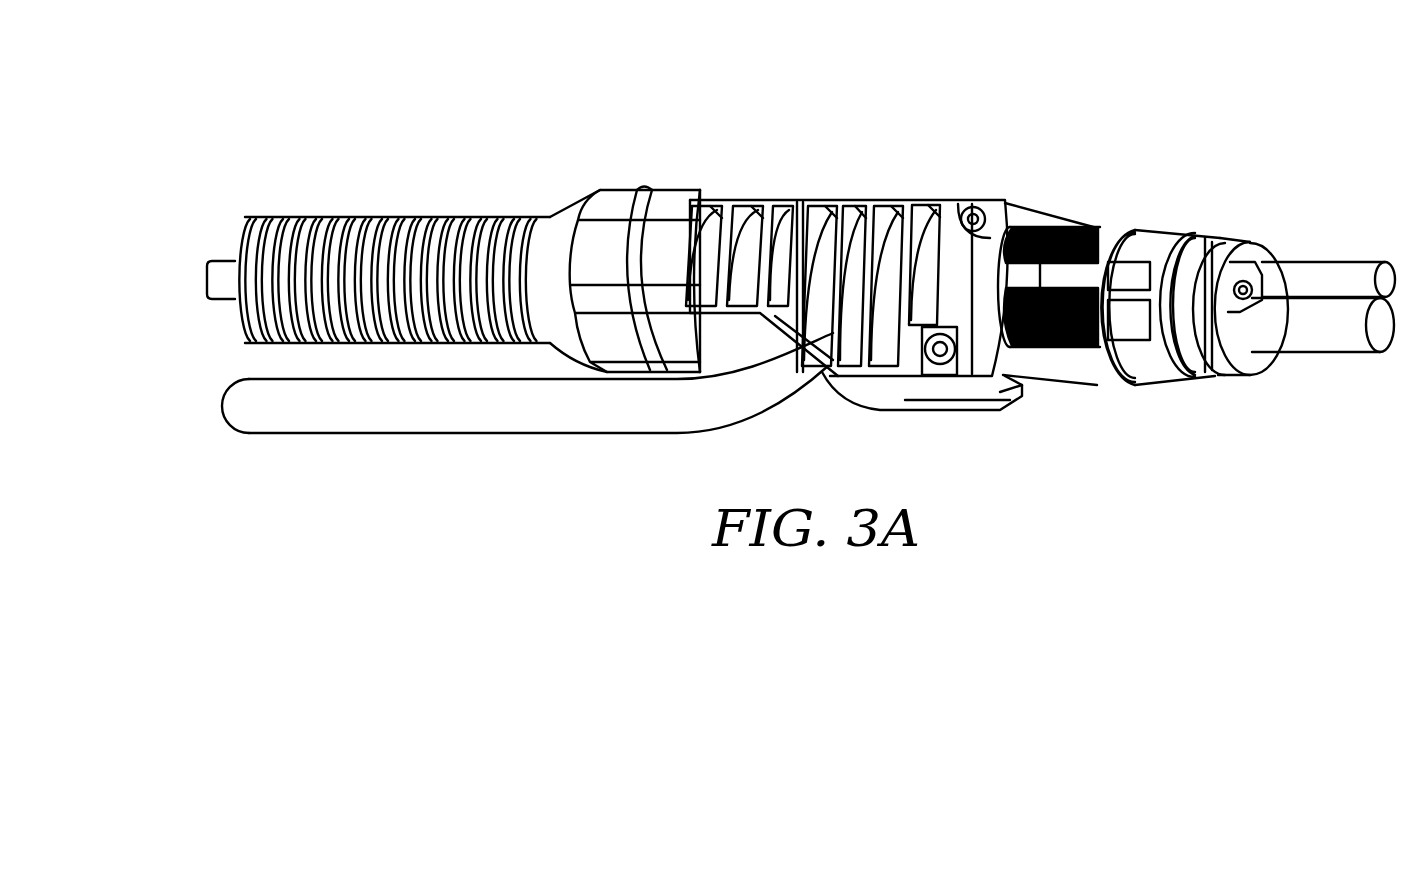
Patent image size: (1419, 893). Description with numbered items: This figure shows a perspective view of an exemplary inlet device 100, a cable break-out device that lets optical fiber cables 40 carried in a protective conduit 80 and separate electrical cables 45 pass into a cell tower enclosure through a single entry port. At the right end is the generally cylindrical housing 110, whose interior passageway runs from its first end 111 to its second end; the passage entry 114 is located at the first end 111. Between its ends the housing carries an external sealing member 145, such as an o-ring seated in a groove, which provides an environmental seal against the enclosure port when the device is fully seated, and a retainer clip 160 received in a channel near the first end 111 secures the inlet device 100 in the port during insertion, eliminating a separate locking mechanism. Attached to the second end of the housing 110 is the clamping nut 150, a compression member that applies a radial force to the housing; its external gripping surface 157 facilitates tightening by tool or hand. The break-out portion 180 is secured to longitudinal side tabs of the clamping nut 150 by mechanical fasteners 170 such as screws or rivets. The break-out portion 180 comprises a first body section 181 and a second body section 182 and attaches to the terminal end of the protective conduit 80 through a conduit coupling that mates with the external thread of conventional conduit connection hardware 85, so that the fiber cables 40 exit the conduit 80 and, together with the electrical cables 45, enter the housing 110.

The inlet device 100 is at (1180, 107).
The optical fiber jumper lines or cables 40 is at (208, 278).
The electrical jumper lines or cables 45 is at (468, 415).
The protective conduit 80 is at (407, 215).
The conduit connection hardware 85 is at (714, 199).
The break-out portion 180 is at (847, 244).
The first body section 181 is at (857, 199).
The second body section 182 is at (913, 413).
The mechanical fasteners 170 is at (970, 205).
The clamping nut 150 is at (1071, 307).
The gripping surface 157 is at (1064, 348).
The housing 110 is at (1209, 311).
The first end 111 is at (1255, 300).
The passage entry 114 is at (1279, 348).
The external sealing member 145 is at (1132, 332).
The retainer clip 160 is at (1200, 332).